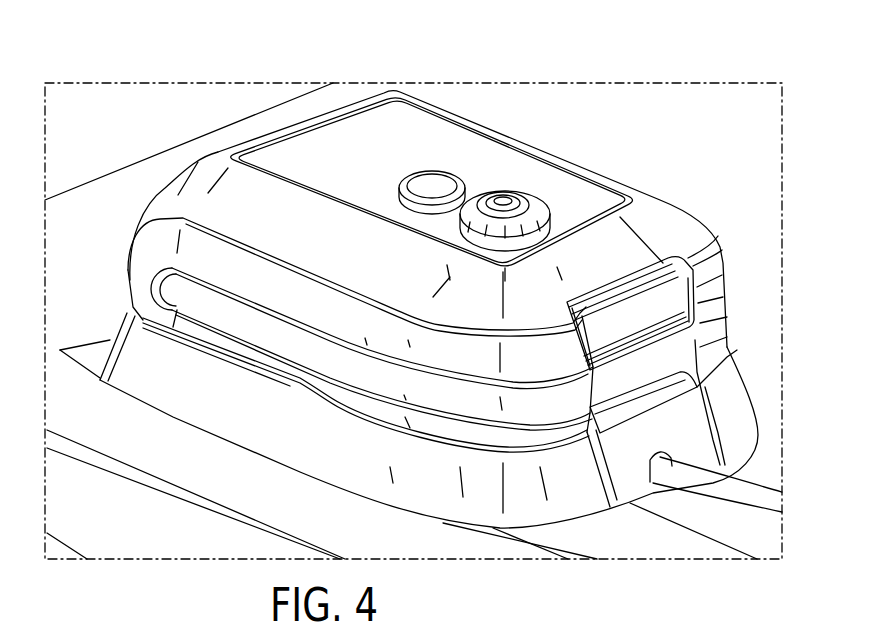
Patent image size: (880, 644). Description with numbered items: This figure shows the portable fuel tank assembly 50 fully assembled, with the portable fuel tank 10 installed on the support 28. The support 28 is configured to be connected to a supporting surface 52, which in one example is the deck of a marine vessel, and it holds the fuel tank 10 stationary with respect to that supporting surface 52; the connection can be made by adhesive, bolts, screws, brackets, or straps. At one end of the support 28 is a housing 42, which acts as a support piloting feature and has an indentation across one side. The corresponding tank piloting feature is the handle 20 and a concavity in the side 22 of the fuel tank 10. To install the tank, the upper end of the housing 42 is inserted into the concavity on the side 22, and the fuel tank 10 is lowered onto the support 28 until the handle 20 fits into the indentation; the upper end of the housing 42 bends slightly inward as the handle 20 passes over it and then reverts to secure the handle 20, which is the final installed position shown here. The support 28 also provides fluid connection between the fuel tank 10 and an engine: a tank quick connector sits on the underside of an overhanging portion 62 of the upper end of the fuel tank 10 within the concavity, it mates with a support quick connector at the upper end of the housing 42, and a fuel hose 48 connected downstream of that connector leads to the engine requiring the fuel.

The portable fuel tank 10 is at (303, 137).
The handle 20 is at (670, 353).
The side 22 is at (533, 398).
The support 28 is at (170, 393).
The housing 42 is at (647, 315).
The fuel hose 48 is at (707, 488).
The portable fuel tank assembly 50 is at (716, 216).
The supporting surface 52 is at (230, 487).
The overhanging portion 62 is at (640, 277).